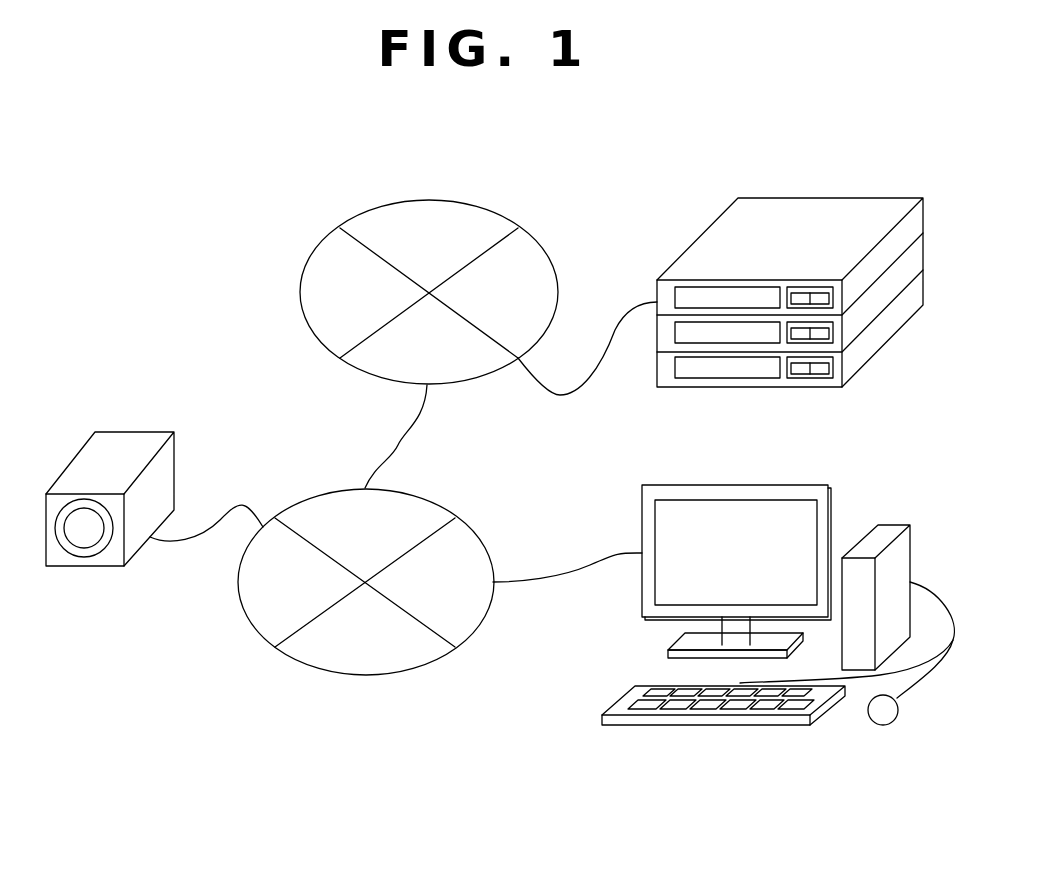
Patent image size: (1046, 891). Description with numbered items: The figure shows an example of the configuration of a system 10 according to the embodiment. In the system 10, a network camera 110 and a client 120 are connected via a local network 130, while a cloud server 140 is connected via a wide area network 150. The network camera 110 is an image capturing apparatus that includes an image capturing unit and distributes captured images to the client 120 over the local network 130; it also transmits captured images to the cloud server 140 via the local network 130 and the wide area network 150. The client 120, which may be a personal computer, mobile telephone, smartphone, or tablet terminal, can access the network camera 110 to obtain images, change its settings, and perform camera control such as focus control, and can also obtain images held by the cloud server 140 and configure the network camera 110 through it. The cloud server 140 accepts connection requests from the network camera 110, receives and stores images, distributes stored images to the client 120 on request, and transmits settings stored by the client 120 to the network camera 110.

The system 10 is at (172, 223).
The network camera 110 is at (92, 568).
The client 120 is at (730, 727).
The local network 130 is at (367, 676).
The cloud server 140 is at (833, 198).
The wide area network 150 is at (438, 199).